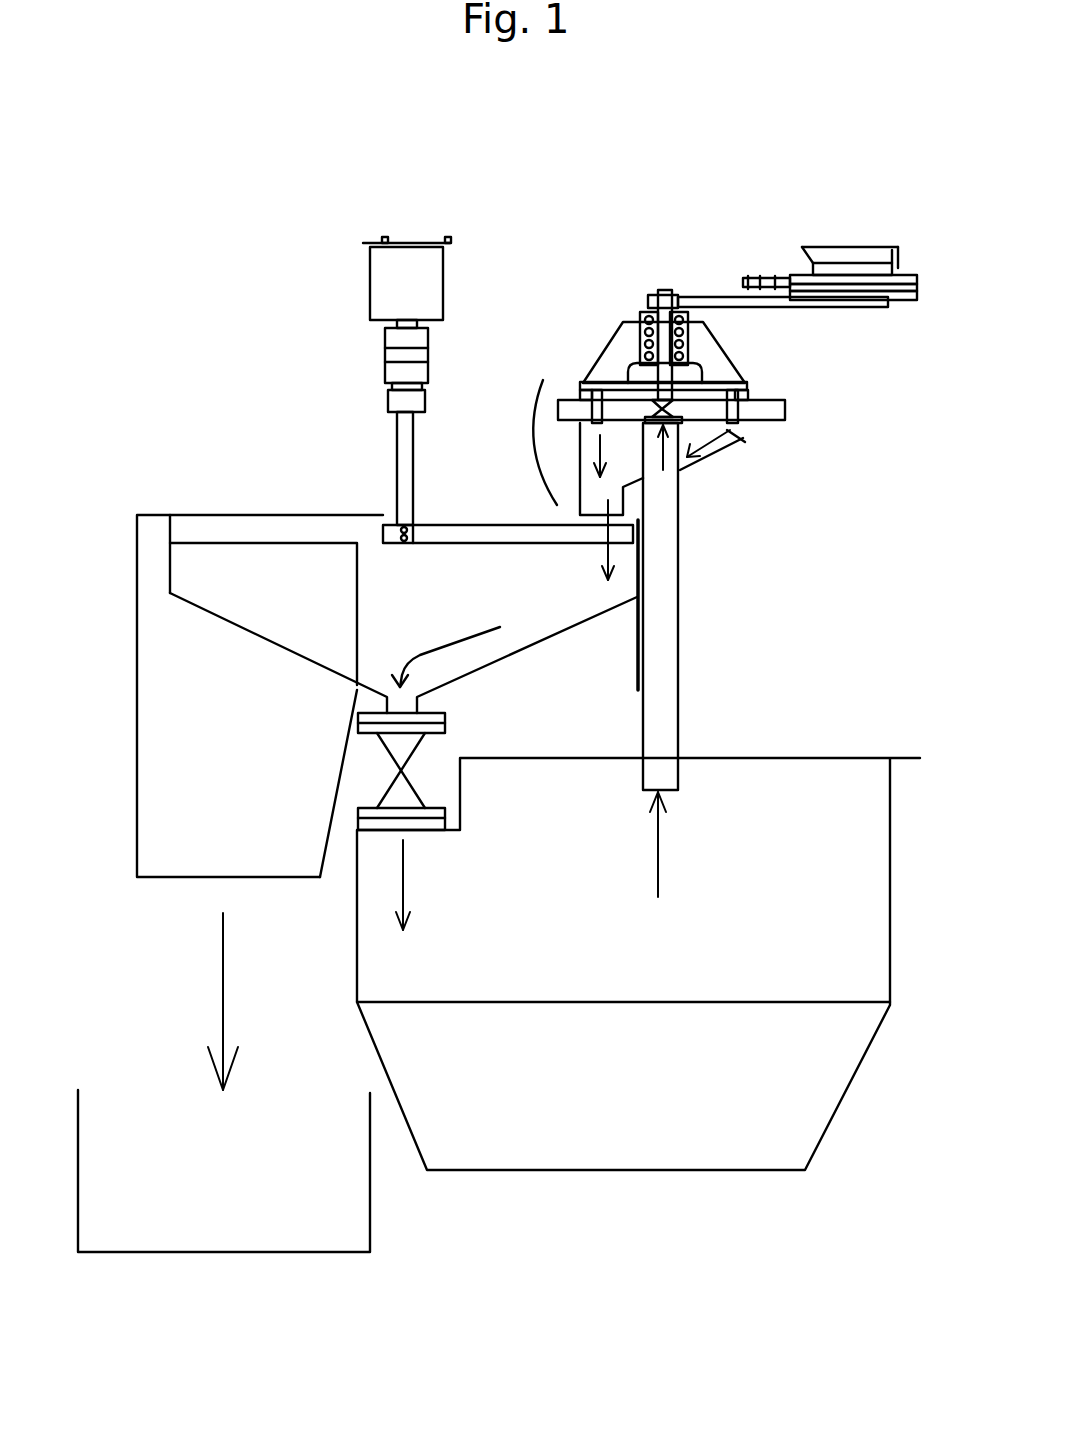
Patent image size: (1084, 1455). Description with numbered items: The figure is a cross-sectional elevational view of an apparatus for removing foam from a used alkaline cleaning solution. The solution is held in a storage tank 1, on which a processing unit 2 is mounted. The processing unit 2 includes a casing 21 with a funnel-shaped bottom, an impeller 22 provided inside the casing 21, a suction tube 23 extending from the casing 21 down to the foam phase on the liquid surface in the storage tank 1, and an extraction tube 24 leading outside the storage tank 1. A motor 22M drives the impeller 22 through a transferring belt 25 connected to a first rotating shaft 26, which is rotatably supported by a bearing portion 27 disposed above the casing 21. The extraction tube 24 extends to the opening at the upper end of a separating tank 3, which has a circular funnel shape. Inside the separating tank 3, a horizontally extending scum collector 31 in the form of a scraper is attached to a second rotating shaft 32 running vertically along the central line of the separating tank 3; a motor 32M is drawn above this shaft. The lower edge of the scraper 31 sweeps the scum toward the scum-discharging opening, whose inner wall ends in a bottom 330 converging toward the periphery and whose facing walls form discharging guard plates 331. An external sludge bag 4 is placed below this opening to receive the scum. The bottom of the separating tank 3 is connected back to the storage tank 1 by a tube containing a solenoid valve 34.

The storage tank 1 is at (745, 1173).
The processing unit 2 is at (717, 380).
The separating tank 3 is at (555, 636).
The external sludge bag 4 is at (257, 1253).
The casing 21 is at (710, 410).
The impeller 22 is at (745, 442).
The suction tube 23 is at (680, 627).
The extraction tube 24 is at (625, 490).
The transferring belt 25 is at (732, 300).
The first rotating shaft 26 is at (663, 293).
The bearing portion 27 is at (640, 347).
The scum collector 31 is at (457, 528).
The second rotating shaft 32 is at (397, 447).
The motor 32M is at (380, 283).
The solenoid valve 34 is at (408, 762).
The motor 22M is at (815, 250).
The bottom 330 is at (327, 843).
The discharging guard plates 331 is at (252, 863).